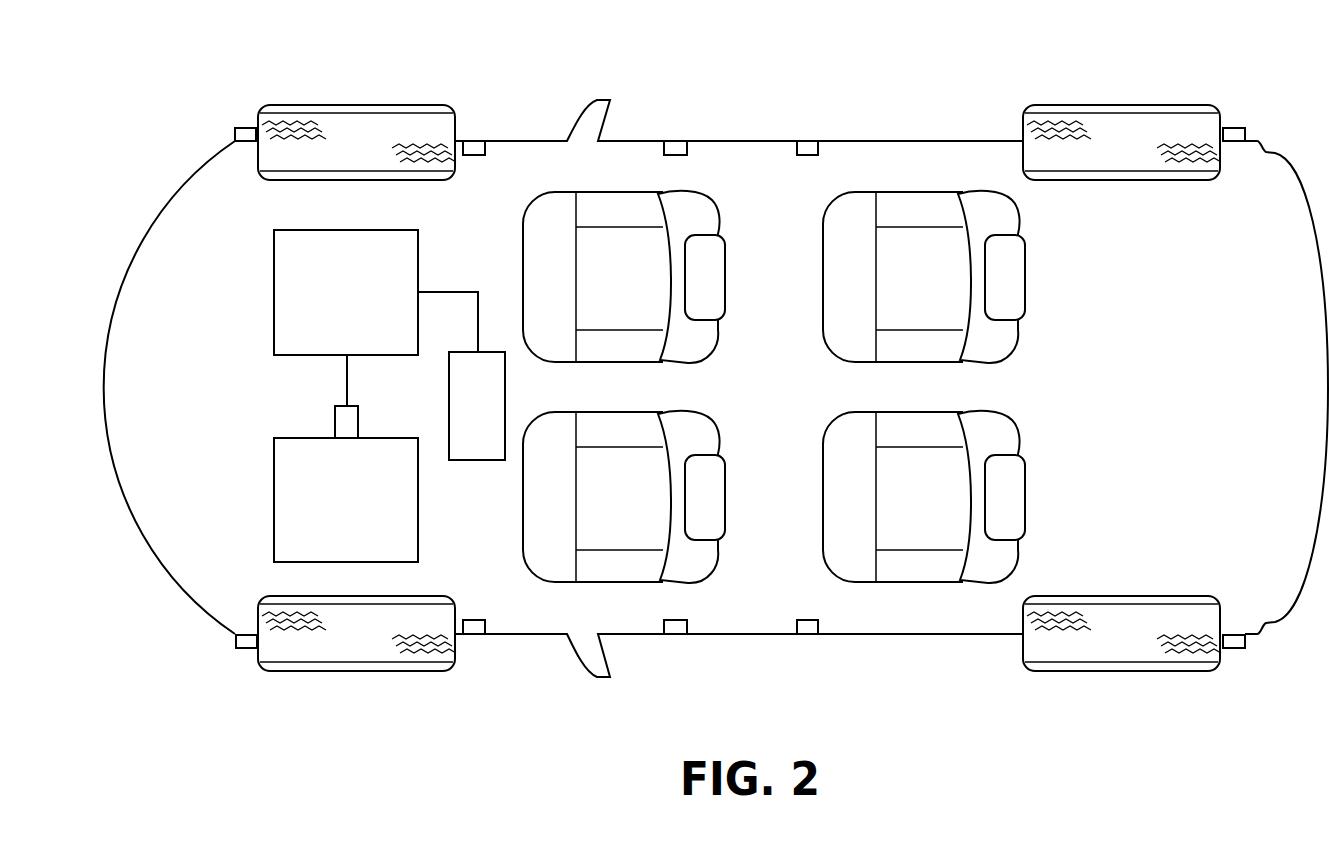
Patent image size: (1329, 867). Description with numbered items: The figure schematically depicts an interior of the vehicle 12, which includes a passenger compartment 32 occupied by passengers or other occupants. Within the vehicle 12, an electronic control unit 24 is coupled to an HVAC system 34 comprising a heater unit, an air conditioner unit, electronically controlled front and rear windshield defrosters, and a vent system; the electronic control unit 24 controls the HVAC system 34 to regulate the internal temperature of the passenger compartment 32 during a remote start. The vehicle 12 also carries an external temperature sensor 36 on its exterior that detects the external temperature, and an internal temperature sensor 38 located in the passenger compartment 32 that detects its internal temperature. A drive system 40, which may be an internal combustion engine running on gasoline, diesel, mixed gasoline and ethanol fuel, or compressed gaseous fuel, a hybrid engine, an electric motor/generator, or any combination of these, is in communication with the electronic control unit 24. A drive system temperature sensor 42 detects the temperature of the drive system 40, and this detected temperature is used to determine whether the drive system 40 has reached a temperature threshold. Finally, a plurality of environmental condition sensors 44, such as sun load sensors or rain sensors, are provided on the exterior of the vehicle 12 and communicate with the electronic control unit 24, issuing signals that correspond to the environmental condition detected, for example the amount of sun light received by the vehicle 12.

The vehicle 12 is at (946, 78).
The electronic control unit 24 is at (274, 292).
The passenger compartment 32 is at (770, 190).
The HVAC system 34 is at (449, 417).
The external temperature sensor 36 is at (475, 635).
The internal temperature sensor 38 is at (672, 635).
The drive system 40 is at (306, 438).
The drive system temperature sensor 42 is at (338, 406).
The environmental condition sensors 44 is at (232, 138).